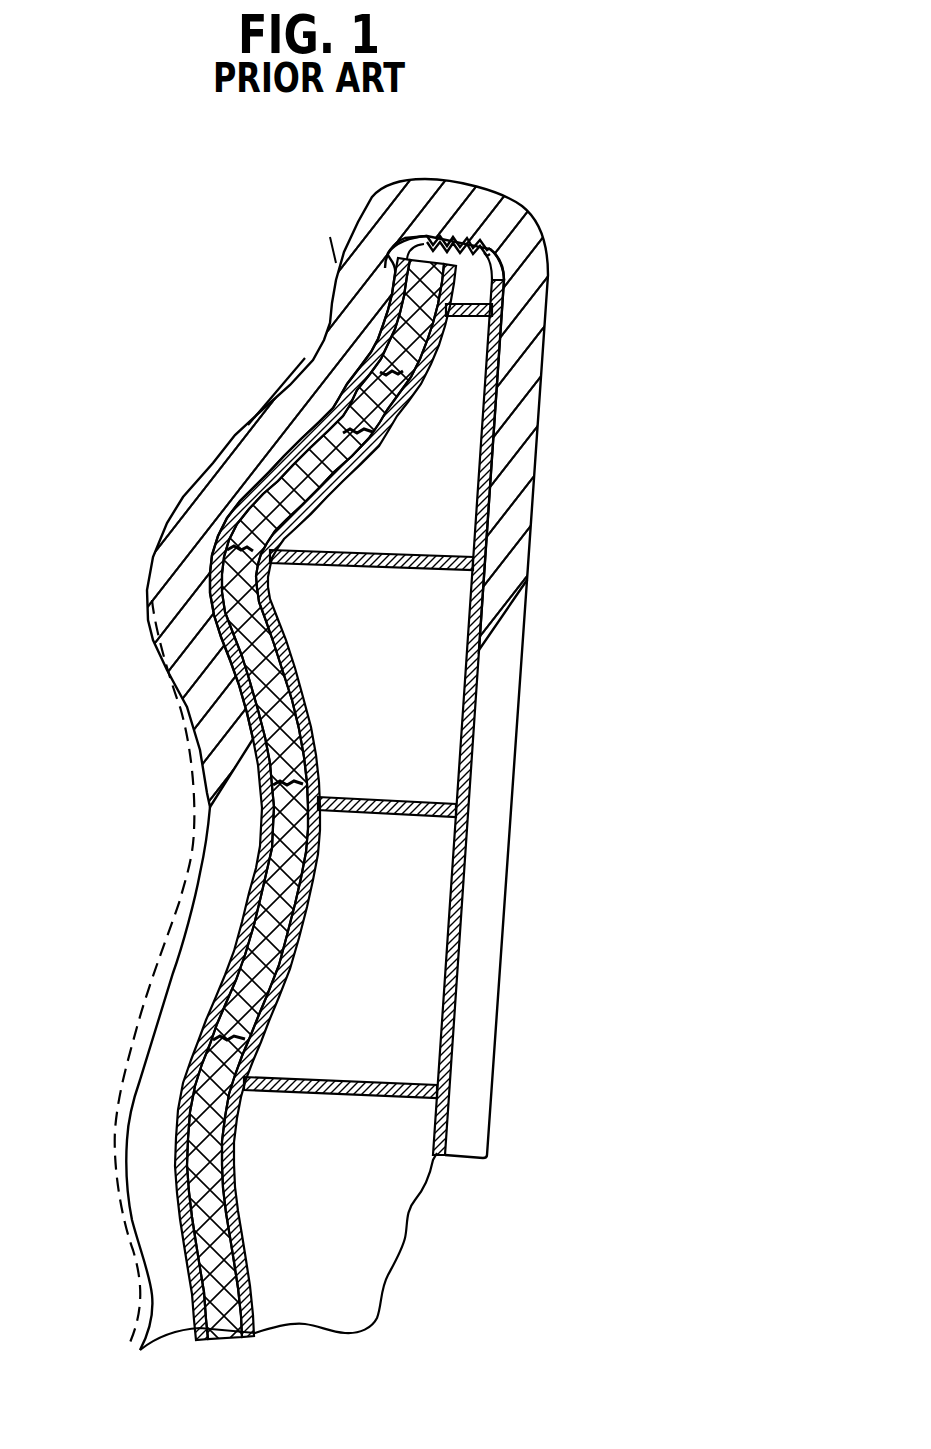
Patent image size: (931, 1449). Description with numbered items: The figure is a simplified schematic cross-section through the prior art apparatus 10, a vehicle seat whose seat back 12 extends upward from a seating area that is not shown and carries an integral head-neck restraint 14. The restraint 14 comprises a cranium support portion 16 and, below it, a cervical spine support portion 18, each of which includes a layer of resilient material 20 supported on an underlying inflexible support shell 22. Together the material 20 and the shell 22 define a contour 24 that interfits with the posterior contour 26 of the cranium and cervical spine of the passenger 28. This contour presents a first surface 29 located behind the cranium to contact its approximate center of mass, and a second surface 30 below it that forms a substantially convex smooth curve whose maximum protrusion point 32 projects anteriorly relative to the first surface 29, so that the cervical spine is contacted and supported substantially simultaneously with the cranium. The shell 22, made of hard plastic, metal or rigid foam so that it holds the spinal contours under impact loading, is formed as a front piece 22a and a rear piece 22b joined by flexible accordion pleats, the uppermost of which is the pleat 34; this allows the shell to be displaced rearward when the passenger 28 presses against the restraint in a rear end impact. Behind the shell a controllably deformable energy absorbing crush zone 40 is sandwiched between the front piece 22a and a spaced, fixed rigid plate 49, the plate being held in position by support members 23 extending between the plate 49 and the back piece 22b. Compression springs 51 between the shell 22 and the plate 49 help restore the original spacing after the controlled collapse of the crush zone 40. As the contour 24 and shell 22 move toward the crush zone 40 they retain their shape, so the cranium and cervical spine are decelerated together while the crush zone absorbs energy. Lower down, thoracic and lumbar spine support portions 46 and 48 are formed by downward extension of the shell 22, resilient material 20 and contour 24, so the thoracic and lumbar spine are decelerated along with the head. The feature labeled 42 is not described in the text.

The prior art apparatus 10 is at (582, 210).
The seat back 12 is at (540, 906).
The head-neck restraint 14 is at (225, 381).
The cranium support portion 16 is at (332, 283).
The cervical spine support portion 18 is at (147, 560).
The layer of resilient material 20 is at (316, 345).
The support shell 22 is at (213, 520).
The front piece 22a is at (400, 242).
The rear piece 22b is at (500, 271).
The support members 23 is at (460, 318).
The contour 24 is at (203, 401).
The posterior contour 26 is at (237, 433).
The passenger 28 is at (251, 226).
The first surface 29 is at (331, 306).
The second surface 30 is at (195, 458).
The maximum protrusion point 32 is at (148, 587).
The flexible accordion pleat 34 is at (465, 232).
The energy absorbing crush zone 40 is at (298, 648).
The flange 42 is at (262, 405).
The thoracic spine support portion 46 is at (180, 895).
The lumbar spine support portion 48 is at (122, 1103).
The rigid plate 49 is at (305, 913).
The compression springs 51 is at (390, 376).